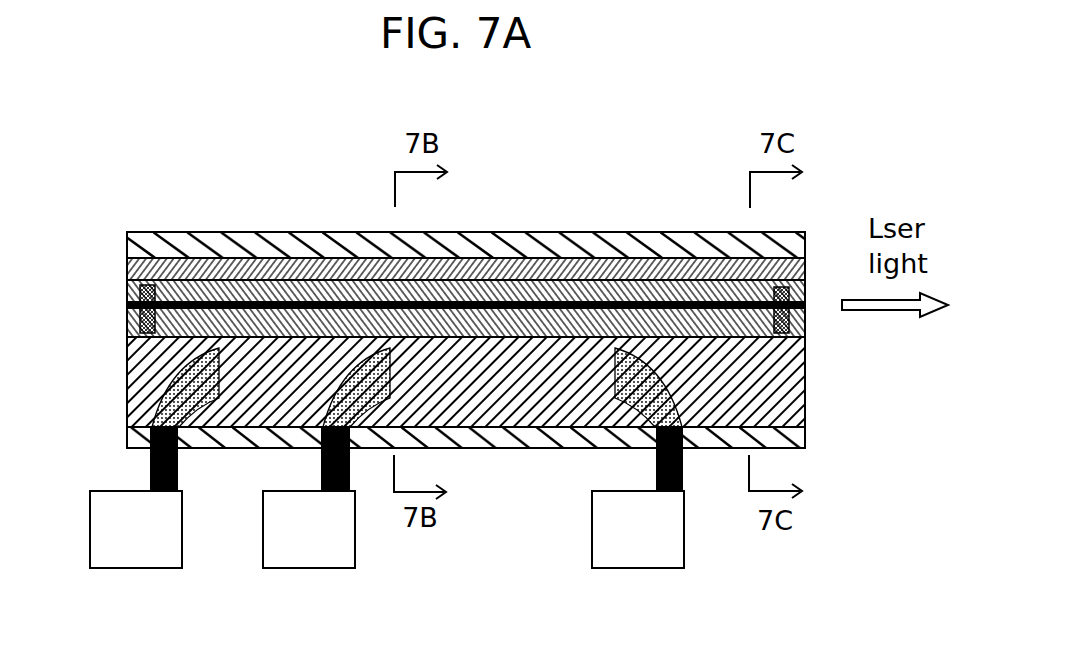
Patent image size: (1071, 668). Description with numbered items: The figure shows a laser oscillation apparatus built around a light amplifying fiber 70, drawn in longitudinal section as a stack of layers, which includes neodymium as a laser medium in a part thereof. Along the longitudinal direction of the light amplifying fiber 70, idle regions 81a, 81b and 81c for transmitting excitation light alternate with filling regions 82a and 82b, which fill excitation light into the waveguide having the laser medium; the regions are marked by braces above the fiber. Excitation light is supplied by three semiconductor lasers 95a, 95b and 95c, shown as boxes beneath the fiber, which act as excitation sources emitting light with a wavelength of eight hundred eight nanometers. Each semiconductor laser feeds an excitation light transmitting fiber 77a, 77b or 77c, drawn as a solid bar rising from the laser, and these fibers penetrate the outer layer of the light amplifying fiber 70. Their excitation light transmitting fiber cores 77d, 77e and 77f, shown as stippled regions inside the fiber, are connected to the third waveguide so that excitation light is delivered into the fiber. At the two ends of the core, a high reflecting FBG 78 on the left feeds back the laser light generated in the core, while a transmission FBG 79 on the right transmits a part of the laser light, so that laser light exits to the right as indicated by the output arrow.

The light amplifying fiber 70 is at (813, 220).
The high reflecting FBG 78 is at (142, 292).
The transmission FBG 79 is at (805, 343).
The idle region 81a is at (127, 230).
The idle region 81b is at (395, 230).
The idle region 81c is at (805, 230).
The filling region 82a is at (220, 230).
The filling region 82b is at (395, 230).
The excitation light transmitting fiber 77a is at (178, 463).
The excitation light transmitting fiber 77b is at (350, 473).
The excitation light transmitting fiber 77c is at (683, 480).
The excitation light transmitting fiber core 77d is at (175, 392).
The excitation light transmitting fiber core 77e is at (335, 397).
The excitation light transmitting fiber core 77f is at (602, 434).
The semiconductor laser 95a is at (140, 568).
The semiconductor laser 95b is at (313, 568).
The semiconductor laser 95c is at (653, 568).